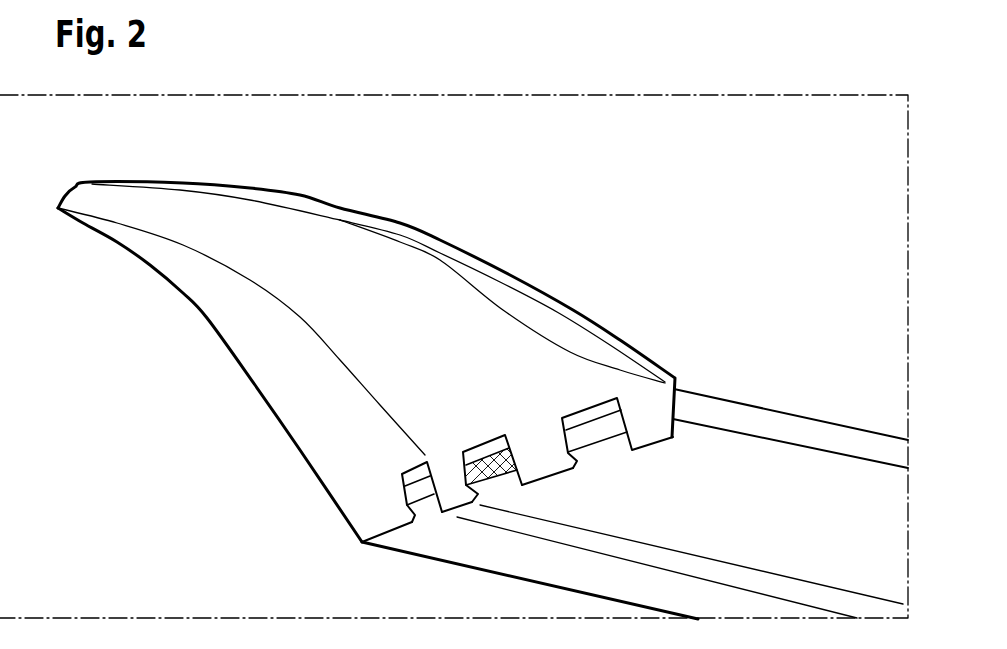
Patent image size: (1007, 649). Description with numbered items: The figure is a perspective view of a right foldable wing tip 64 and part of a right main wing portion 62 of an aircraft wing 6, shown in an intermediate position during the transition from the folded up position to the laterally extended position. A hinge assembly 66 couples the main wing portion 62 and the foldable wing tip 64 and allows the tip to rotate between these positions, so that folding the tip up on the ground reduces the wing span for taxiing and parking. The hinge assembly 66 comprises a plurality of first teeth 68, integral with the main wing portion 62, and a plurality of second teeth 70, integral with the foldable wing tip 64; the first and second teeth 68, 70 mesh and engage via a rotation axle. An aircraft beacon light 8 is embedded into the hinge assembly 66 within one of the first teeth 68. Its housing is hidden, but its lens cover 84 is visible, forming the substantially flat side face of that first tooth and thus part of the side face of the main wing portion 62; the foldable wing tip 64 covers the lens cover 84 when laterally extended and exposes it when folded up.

The aircraft wing 6 is at (734, 236).
The aircraft beacon light 8 is at (486, 440).
The main wing portion 62 is at (806, 476).
The foldable wing tip 64 is at (230, 325).
The hinge assembly 66 is at (341, 539).
The first teeth 68 is at (608, 455).
The second teeth 70 is at (455, 475).
The lens cover 84 is at (494, 470).